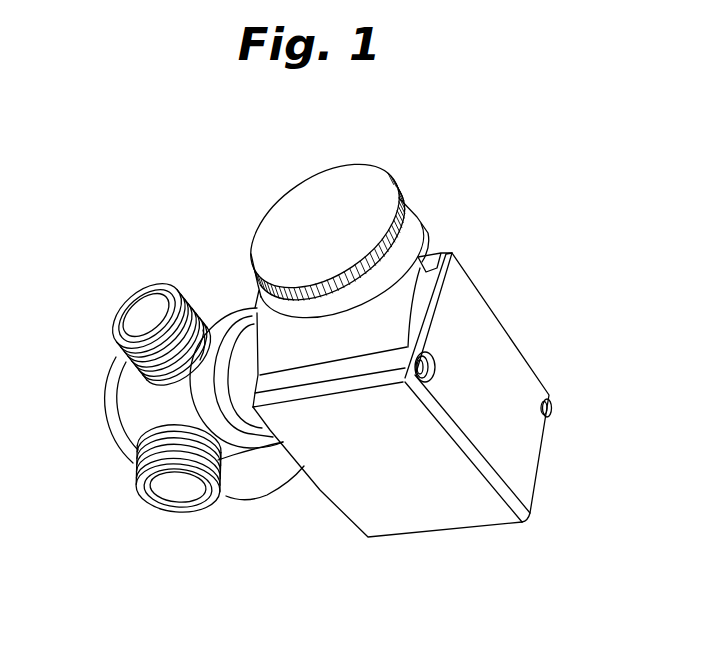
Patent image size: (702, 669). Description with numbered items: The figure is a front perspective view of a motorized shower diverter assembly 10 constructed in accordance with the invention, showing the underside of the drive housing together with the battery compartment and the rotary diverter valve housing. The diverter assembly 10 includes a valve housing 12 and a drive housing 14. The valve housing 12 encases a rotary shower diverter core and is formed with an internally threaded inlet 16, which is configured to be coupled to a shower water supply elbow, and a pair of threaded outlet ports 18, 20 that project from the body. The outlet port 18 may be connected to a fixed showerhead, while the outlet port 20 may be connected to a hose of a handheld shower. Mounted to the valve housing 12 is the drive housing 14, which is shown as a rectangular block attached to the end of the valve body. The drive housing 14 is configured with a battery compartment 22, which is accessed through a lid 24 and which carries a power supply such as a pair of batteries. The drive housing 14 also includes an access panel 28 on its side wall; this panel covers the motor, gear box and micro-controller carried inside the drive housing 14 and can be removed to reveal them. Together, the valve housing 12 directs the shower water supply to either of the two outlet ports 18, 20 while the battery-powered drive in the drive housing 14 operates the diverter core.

The motorized shower diverter assembly 10 is at (172, 158).
The valve housing 12 is at (116, 407).
The drive housing 14 is at (430, 502).
The internally threaded inlet 16 is at (271, 497).
The threaded outlet port 18 is at (121, 303).
The threaded outlet port 20 is at (137, 476).
The battery compartment 22 is at (436, 250).
The lid 24 is at (360, 190).
The access panel 28 is at (500, 365).